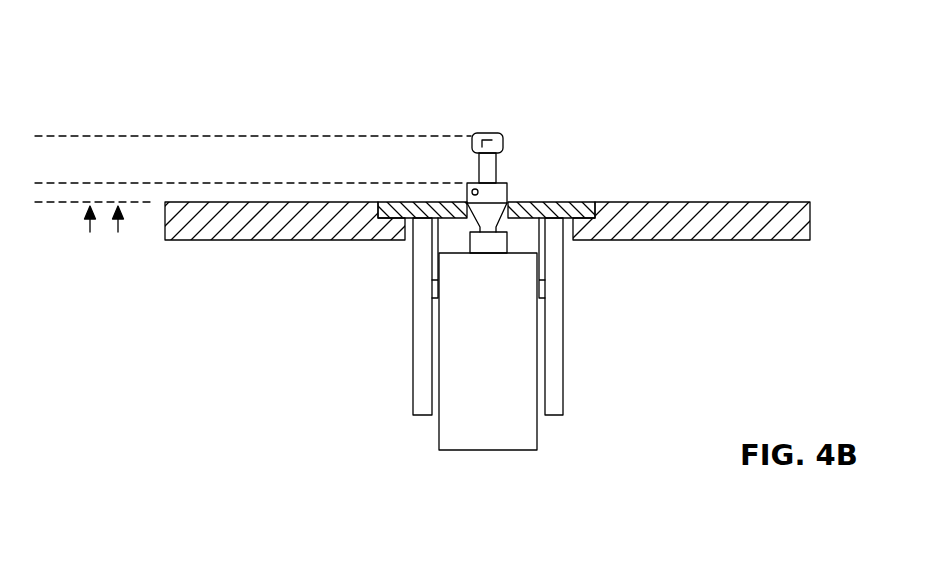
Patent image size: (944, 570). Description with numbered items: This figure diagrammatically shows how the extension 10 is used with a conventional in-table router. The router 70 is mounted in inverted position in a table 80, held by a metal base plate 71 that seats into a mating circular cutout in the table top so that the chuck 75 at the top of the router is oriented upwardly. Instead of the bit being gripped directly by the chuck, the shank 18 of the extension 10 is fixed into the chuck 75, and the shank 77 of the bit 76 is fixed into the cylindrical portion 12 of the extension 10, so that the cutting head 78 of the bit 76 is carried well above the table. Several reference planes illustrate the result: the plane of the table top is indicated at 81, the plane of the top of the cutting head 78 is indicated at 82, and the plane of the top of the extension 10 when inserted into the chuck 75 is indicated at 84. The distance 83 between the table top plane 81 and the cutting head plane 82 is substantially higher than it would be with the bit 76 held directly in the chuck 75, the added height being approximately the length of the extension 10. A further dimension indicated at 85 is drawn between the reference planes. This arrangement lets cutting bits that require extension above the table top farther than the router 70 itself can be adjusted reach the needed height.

The extension 10 is at (491, 125).
The cylindrical portion 12 is at (500, 190).
The shank 18 is at (487, 210).
The router 70 is at (492, 451).
The base plate 71 is at (584, 209).
The chuck 75 is at (482, 242).
The bit 76 is at (489, 134).
The shank 77 is at (490, 167).
The cutting head 78 is at (471, 138).
The table 80 is at (742, 204).
The plane of table top 81 is at (148, 203).
The plane of the top of cutting head 82 is at (237, 136).
The distance between planes 83 is at (88, 137).
The plane of the top of extension 84 is at (254, 183).
The lower height 85 is at (118, 184).